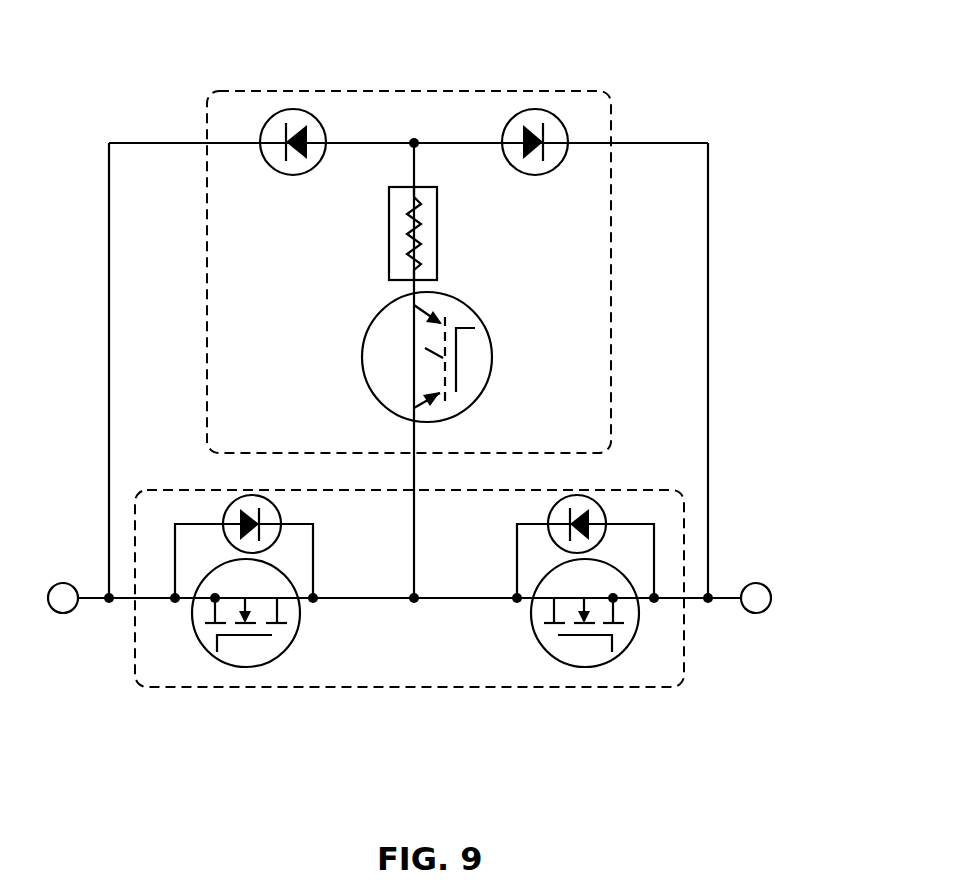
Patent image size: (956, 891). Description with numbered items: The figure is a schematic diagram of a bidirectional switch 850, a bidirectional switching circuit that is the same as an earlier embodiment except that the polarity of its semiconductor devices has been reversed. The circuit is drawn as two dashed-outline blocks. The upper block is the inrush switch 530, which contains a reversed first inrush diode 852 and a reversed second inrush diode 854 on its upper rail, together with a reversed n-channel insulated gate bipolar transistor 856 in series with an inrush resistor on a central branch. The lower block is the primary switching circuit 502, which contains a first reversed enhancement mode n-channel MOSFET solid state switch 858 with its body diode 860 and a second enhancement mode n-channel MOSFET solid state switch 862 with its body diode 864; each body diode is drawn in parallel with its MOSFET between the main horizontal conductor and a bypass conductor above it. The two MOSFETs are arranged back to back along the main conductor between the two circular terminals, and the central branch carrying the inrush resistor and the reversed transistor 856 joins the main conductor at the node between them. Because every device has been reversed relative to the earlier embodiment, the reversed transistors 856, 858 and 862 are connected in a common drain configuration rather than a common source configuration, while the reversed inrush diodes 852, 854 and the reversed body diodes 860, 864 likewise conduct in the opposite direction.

The bidirectional switch 850 is at (752, 125).
The inrush switch 530 is at (600, 95).
The primary switching circuit 502 is at (684, 530).
The reversed first inrush diode 852 is at (287, 110).
The reversed second inrush diode 854 is at (537, 109).
The reversed n-channel insulated gate bipolar transistor 856 is at (490, 333).
The first reversed enhancement mode n-channel MOSFET solid state switch 858 is at (200, 643).
The body diode 860 is at (238, 500).
The second enhancement mode n-channel MOSFET solid state switch 862 is at (623, 651).
The body diode 864 is at (597, 500).